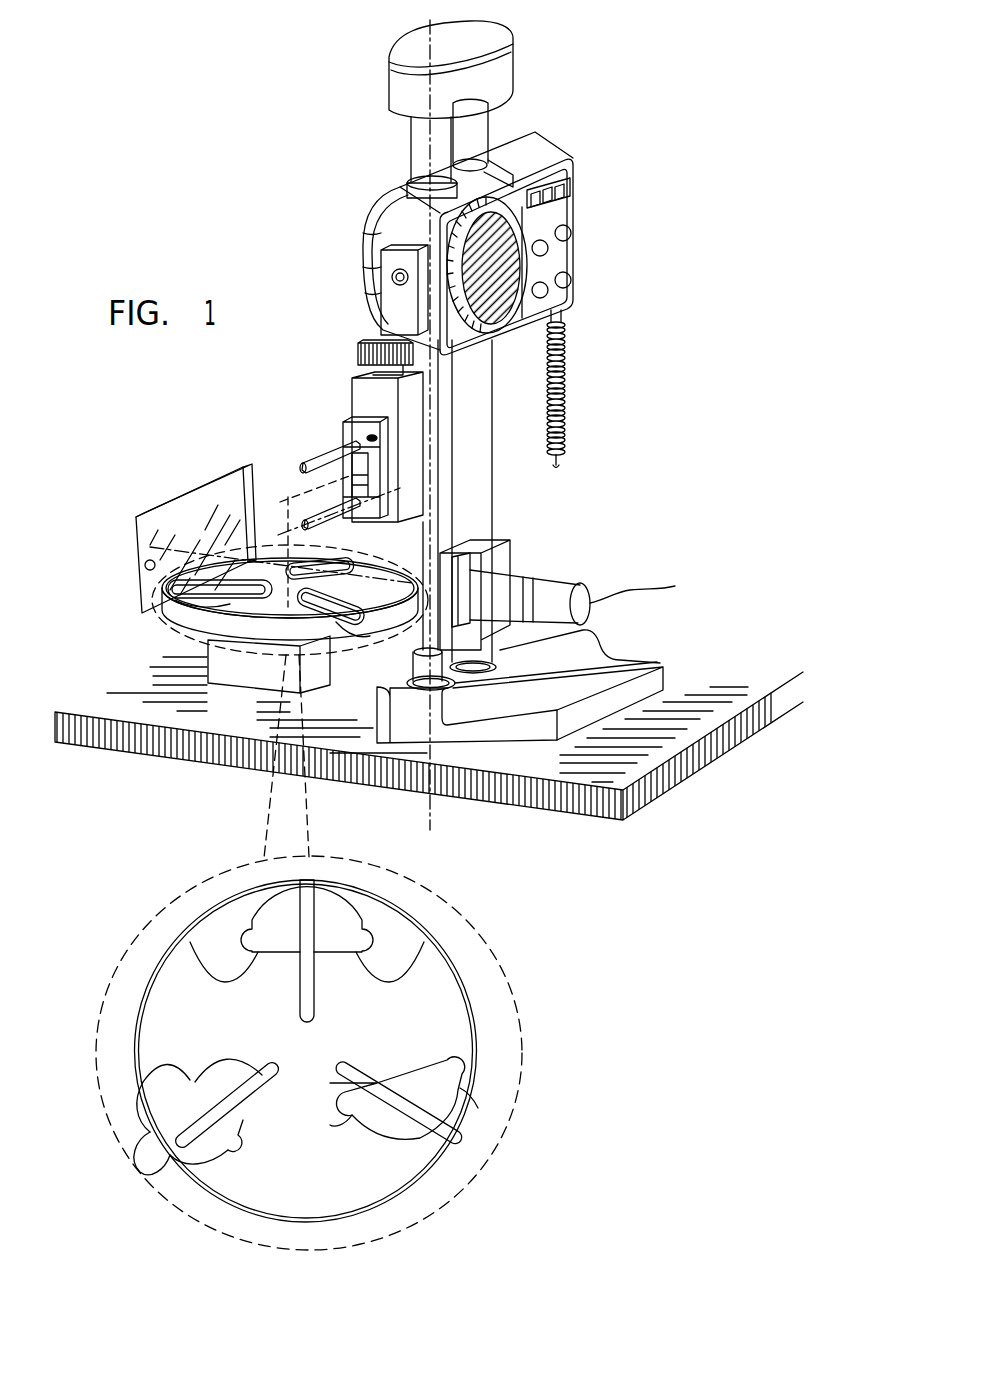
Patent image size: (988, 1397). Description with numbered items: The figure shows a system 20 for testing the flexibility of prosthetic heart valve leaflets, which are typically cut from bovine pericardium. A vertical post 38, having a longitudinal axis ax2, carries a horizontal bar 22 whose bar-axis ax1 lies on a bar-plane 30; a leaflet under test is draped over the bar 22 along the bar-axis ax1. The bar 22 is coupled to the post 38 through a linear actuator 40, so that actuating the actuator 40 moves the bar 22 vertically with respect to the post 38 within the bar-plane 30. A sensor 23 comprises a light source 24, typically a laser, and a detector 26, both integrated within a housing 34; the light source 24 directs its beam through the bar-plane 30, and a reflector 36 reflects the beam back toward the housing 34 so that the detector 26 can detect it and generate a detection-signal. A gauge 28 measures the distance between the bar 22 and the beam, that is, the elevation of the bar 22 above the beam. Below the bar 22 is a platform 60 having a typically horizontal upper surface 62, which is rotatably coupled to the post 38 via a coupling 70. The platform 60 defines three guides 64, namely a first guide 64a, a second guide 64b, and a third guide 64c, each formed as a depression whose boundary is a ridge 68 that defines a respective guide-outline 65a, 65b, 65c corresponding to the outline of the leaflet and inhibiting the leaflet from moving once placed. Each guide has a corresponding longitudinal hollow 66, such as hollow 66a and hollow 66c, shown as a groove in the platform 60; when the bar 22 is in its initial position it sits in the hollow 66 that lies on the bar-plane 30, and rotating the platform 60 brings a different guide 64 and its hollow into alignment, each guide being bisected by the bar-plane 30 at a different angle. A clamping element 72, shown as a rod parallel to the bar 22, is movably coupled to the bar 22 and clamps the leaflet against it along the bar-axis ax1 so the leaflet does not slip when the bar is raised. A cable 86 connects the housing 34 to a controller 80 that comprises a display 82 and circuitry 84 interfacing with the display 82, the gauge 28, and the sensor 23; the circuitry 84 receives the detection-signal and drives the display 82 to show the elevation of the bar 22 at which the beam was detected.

The system 20 is at (684, 202).
The horizontal bar 22 is at (326, 521).
The sensor 23 is at (520, 686).
The light source 24 is at (520, 686).
The detector 26 is at (502, 630).
The gauge 28 is at (490, 312).
The bar-plane 30 is at (288, 497).
The housing 34 is at (512, 578).
The reflector 36 is at (188, 513).
The post 38 is at (420, 148).
The linear actuator 40 is at (372, 250).
The platform 60 is at (198, 620).
The surface 62 is at (207, 603).
The guide 64 is at (314, 1038).
The first guide 64a is at (250, 930).
The second guide 64b is at (151, 1148).
The third guide 64c is at (459, 1095).
The first guide-outline 65a is at (190, 942).
The second guide-outline 65b is at (175, 1180).
The third guide-outline 65c is at (382, 1143).
The longitudinal hollow 66 is at (347, 620).
The hollow 66a is at (310, 880).
The hollow 66c is at (466, 1142).
The ridge 68 is at (372, 940).
The coupling 70 is at (242, 670).
The clamping element 72 is at (320, 460).
The controller 80 is at (508, 243).
The display 82 is at (568, 193).
The circuitry 84 is at (575, 176).
The cable 86 is at (566, 380).
The bar-axis ax1 is at (290, 534).
The longitudinal axis ax2 is at (428, 46).